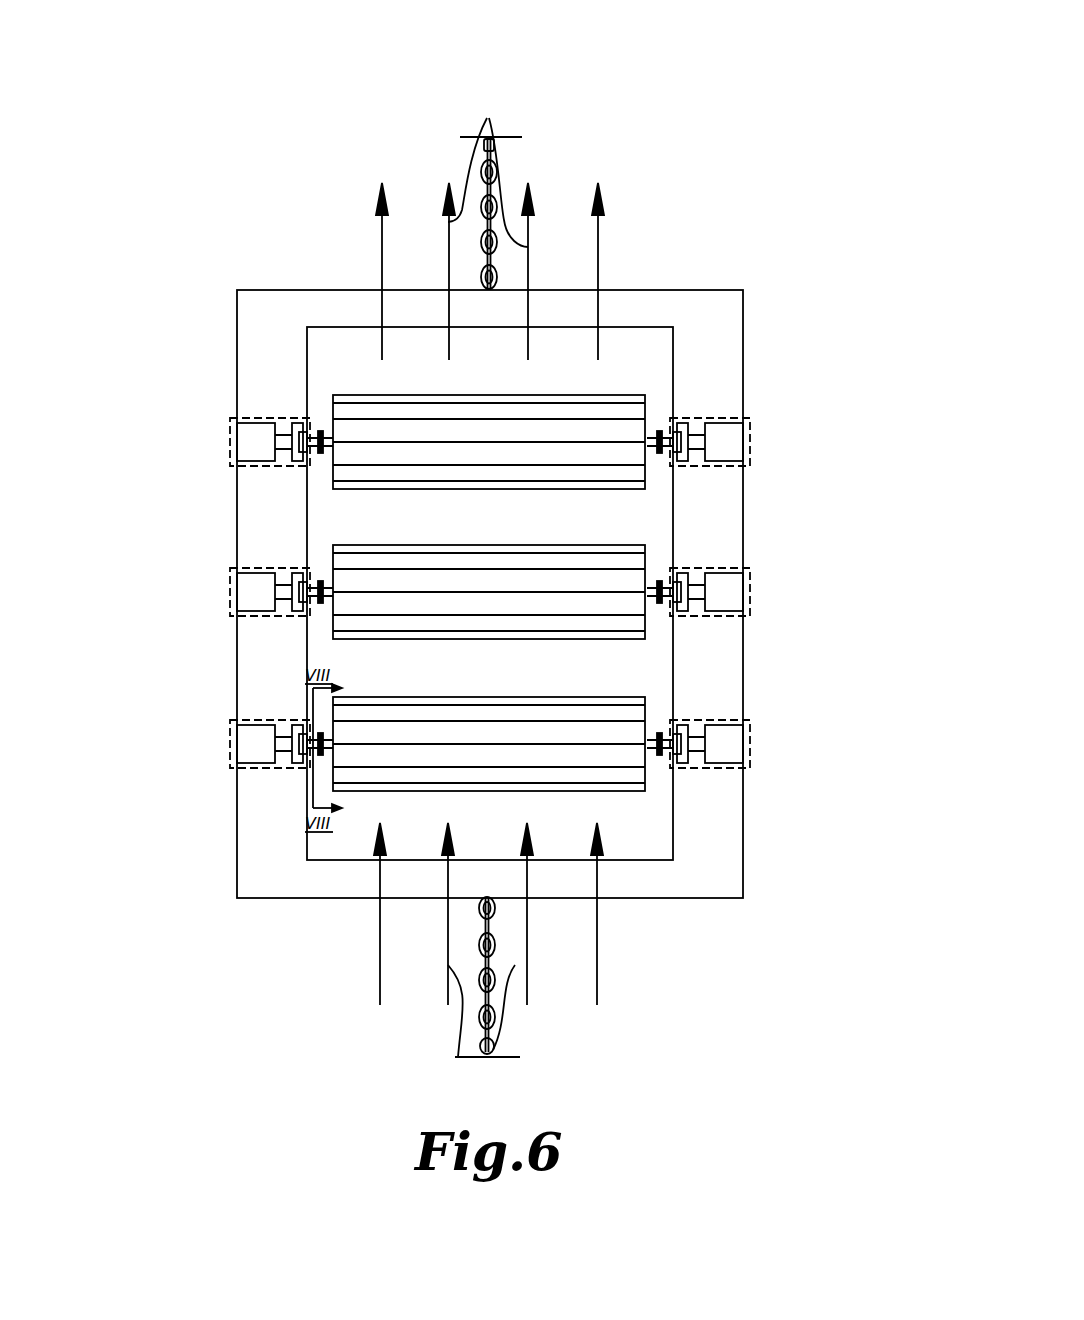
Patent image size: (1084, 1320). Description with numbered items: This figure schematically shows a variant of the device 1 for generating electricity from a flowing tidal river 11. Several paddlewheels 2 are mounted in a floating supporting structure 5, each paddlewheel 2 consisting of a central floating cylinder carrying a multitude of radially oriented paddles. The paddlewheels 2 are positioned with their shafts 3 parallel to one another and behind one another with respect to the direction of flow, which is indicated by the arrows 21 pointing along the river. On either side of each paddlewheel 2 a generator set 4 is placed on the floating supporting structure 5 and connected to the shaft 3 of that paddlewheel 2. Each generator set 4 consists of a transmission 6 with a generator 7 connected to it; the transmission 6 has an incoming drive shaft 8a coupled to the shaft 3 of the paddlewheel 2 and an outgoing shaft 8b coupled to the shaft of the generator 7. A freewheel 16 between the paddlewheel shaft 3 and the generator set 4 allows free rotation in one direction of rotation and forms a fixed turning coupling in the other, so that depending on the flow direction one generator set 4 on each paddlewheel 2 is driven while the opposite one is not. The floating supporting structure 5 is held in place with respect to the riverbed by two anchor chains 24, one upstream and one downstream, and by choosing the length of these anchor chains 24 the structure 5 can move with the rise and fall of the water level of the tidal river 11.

The device 1 is at (176, 104).
The paddlewheel 2 is at (367, 392).
The shaft 3 is at (330, 438).
The generator set 4 is at (230, 420).
The floating supporting structure 5 is at (290, 310).
The transmission 6 is at (298, 424).
The generator 7 is at (257, 446).
The incoming drive shaft 8a is at (319, 455).
The outgoing shaft 8b is at (292, 450).
The tidal river 11 is at (272, 998).
The freewheel 16 is at (303, 455).
The arrow (direction of water flow) 21 is at (487, 122).
The anchor chains 24 is at (489, 265).